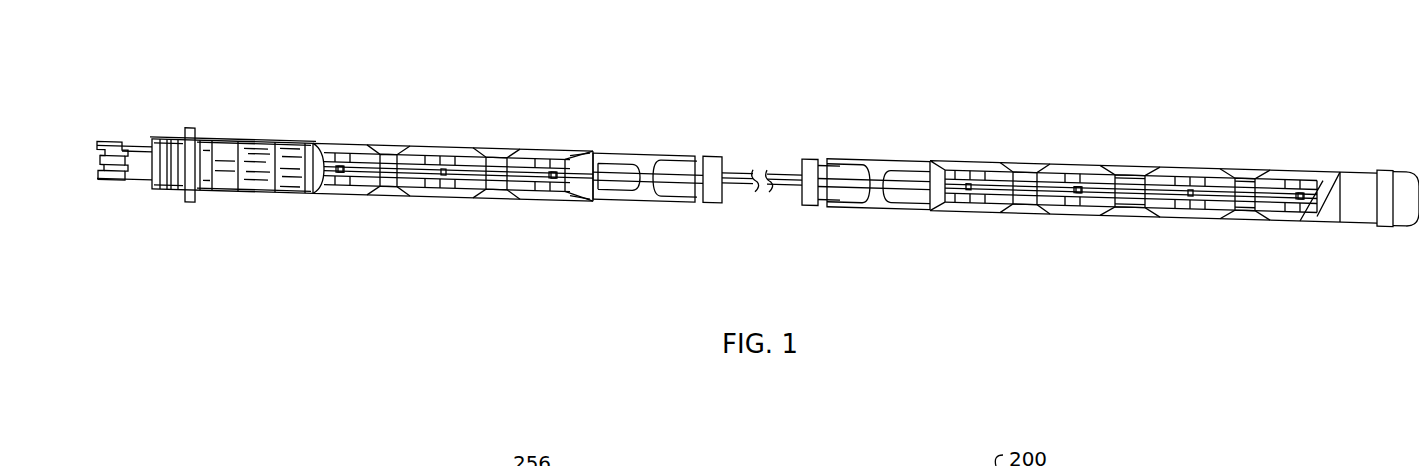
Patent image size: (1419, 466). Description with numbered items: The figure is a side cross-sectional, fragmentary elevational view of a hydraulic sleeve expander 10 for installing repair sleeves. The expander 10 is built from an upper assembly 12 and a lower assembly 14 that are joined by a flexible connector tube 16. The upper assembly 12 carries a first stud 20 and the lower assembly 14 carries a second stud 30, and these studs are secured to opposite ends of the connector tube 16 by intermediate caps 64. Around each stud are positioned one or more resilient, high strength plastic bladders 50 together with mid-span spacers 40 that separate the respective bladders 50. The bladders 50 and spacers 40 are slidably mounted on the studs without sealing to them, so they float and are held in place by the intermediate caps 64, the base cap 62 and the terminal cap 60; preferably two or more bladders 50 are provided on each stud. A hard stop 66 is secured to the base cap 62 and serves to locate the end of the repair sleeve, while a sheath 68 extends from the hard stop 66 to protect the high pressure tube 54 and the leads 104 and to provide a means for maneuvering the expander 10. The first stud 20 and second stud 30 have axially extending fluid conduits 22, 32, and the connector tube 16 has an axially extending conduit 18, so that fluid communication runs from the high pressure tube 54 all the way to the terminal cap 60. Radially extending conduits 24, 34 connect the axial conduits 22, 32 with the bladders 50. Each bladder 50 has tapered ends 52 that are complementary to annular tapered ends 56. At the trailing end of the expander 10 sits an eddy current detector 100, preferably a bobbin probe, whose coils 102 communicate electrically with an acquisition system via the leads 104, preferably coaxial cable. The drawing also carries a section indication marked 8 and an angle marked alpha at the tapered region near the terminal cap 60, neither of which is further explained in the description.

The section line 8- 8 is at (1418, 55).
The hydraulic sleeve expander 10 is at (914, 96).
The upper assembly 12 is at (1151, 114).
The lower assembly 14 is at (374, 108).
The flexible connector tube 16 is at (743, 192).
The axially extending conduit 18 is at (787, 190).
The first stud 20 is at (1200, 180).
The axially extending fluid conduit 22 is at (970, 192).
The radially extending conduit 24 is at (1080, 187).
The second stud 30 is at (462, 160).
The axially extending fluid conduit 32 is at (580, 157).
The radially extending conduit 34 is at (340, 166).
The mid-span spacer 40 is at (400, 134).
The bladder 50 is at (438, 208).
The tapered end 52 is at (517, 200).
The high pressure tube 54 is at (127, 145).
The annular tapered end 56 is at (1235, 170).
The terminal cap 60 is at (1407, 180).
The base cap 62 is at (203, 140).
The intermediate cap 64 is at (713, 155).
The hard stop 66 is at (192, 128).
The sheath 68 is at (150, 152).
The eddy current detector 100 is at (187, 226).
The coils 102 is at (162, 190).
The leads 104 is at (115, 176).
The angle alpha is at (1330, 218).